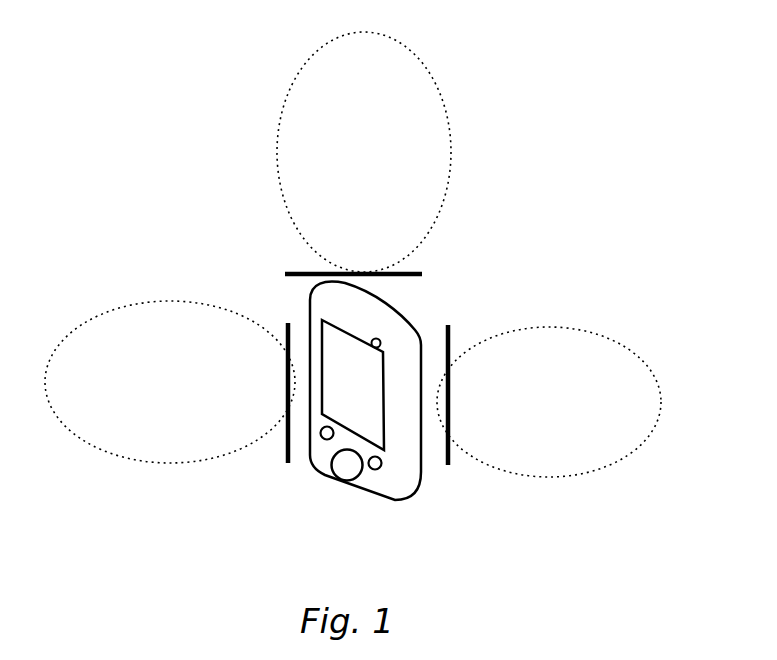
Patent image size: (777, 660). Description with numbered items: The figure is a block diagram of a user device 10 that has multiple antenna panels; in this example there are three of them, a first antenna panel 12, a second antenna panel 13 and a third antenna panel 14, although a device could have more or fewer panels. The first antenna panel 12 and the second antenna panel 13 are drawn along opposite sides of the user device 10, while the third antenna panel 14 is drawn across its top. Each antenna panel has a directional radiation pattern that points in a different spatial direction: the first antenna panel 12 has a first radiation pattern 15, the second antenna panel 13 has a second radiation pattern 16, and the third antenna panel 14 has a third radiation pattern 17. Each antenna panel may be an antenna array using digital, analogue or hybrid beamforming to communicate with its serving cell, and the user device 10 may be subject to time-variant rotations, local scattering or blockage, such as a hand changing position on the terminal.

The user device 10 is at (347, 492).
The first antenna panel 12 is at (285, 443).
The second antenna panel 13 is at (450, 347).
The third antenna panel 14 is at (412, 272).
The first radiation pattern 15 is at (103, 453).
The second radiation pattern 16 is at (633, 348).
The third radiation pattern 17 is at (443, 110).